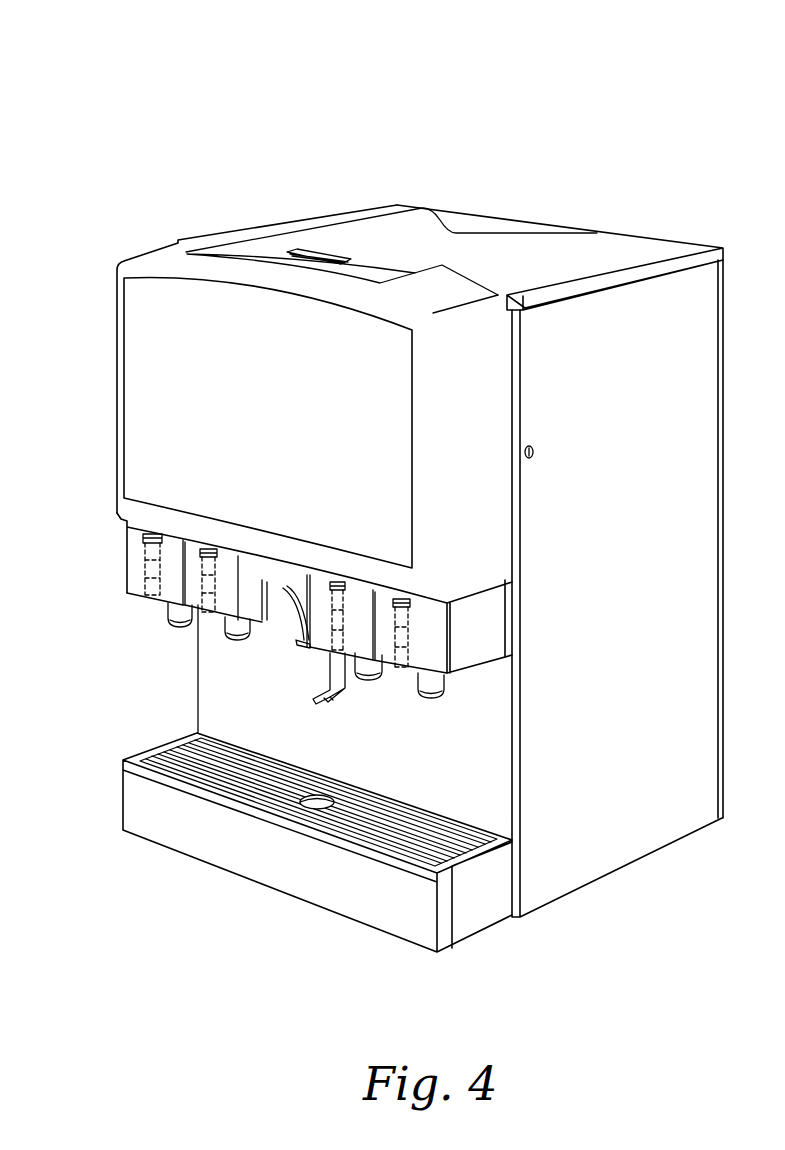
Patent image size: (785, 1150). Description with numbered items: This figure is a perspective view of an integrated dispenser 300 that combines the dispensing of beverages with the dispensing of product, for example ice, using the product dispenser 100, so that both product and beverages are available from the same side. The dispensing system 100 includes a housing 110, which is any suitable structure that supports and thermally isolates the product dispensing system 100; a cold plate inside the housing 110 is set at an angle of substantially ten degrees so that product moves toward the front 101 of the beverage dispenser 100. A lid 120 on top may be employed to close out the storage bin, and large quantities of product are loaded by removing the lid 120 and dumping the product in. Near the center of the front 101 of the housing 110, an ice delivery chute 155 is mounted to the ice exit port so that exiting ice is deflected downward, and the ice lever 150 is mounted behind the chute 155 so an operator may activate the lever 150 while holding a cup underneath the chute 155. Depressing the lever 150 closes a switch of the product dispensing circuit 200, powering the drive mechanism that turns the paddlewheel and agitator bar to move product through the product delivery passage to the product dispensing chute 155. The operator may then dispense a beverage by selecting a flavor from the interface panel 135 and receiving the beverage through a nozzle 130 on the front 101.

The dispensing system 100 is at (219, 184).
The front 101 is at (213, 887).
The housing 110 is at (636, 884).
The lid 120 is at (601, 246).
The nozzle 130 is at (437, 700).
The interface panel 135 is at (172, 600).
The ice lever 150 is at (327, 700).
The ice delivery chute 155 is at (297, 640).
The product dispensing circuit 200 is at (166, 178).
The integrated dispenser 300 is at (112, 172).